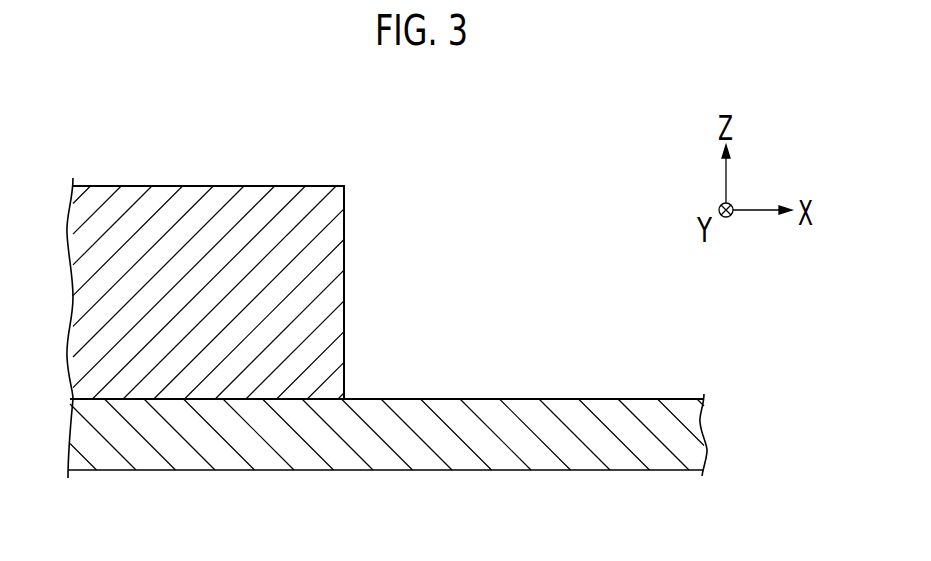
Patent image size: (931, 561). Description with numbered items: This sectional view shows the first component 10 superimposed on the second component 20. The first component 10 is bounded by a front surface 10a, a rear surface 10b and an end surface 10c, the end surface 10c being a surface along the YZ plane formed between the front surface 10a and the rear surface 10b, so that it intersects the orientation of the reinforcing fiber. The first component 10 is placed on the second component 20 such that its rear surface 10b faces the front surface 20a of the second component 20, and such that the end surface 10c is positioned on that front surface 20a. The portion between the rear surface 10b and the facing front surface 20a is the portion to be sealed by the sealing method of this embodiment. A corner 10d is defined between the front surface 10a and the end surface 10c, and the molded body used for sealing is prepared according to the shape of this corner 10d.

The first component 10 is at (223, 195).
The front surface 10a is at (135, 186).
The rear surface 10b is at (205, 398).
The end surface 10c is at (344, 259).
The corner 10d is at (344, 186).
The second component 20 is at (496, 400).
The front surface 20a is at (658, 399).